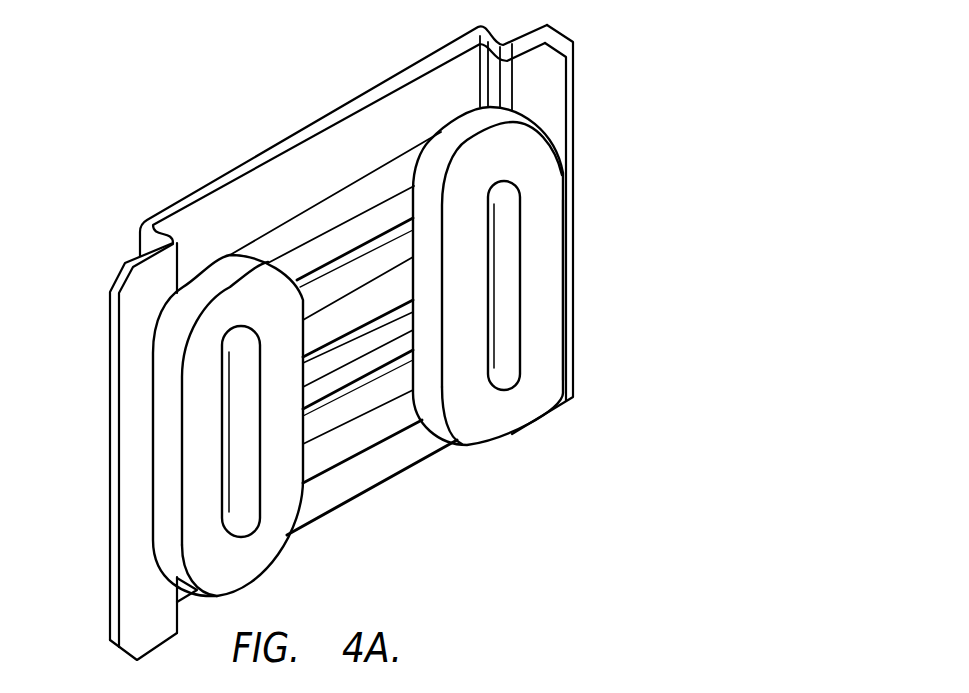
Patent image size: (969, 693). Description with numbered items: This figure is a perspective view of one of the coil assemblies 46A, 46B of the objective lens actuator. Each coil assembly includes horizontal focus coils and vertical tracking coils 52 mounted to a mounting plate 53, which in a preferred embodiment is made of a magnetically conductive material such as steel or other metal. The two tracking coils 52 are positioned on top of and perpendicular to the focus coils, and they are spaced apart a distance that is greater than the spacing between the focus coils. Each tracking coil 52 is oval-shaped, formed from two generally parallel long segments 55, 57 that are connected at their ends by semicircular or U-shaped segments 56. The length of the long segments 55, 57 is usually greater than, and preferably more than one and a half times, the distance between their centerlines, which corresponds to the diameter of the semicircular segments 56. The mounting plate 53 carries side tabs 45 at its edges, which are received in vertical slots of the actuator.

The mounting tab 45 is at (537, 24).
The coil assembly 46A is at (728, 245).
The coil assembly 46B is at (652, 257).
The tracking coil 52 is at (492, 426).
The mounting plate 53 is at (196, 192).
The long segment 55 is at (550, 297).
The semicircular segment 56 is at (503, 123).
The long segment 57 is at (460, 350).